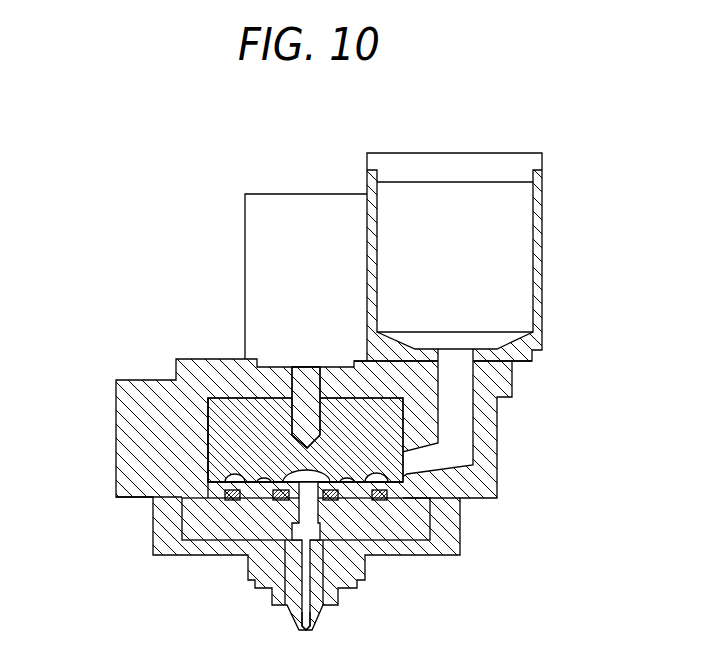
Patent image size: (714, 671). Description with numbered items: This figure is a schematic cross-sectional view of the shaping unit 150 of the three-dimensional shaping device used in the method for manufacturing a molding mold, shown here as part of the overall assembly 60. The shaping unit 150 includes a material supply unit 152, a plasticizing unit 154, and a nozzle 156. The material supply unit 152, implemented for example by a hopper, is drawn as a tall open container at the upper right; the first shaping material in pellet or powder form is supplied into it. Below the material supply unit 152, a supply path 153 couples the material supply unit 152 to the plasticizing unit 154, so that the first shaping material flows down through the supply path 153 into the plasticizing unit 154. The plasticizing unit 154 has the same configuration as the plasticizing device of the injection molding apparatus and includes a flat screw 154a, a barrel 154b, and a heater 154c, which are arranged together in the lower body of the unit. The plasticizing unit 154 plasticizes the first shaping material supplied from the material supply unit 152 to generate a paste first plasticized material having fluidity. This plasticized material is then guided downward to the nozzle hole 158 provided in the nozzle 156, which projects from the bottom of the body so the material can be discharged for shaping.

The discharge head unit 60 is at (551, 101).
The shaping unit 150 is at (536, 140).
The material supply unit 152 is at (538, 228).
The supply path 153 is at (452, 422).
The plasticizing unit 154 is at (223, 453).
The flat screw 154a is at (227, 467).
The barrel 154b is at (233, 522).
The heater 154c is at (228, 488).
The nozzle 156 is at (335, 598).
The nozzle hole 158 is at (308, 619).